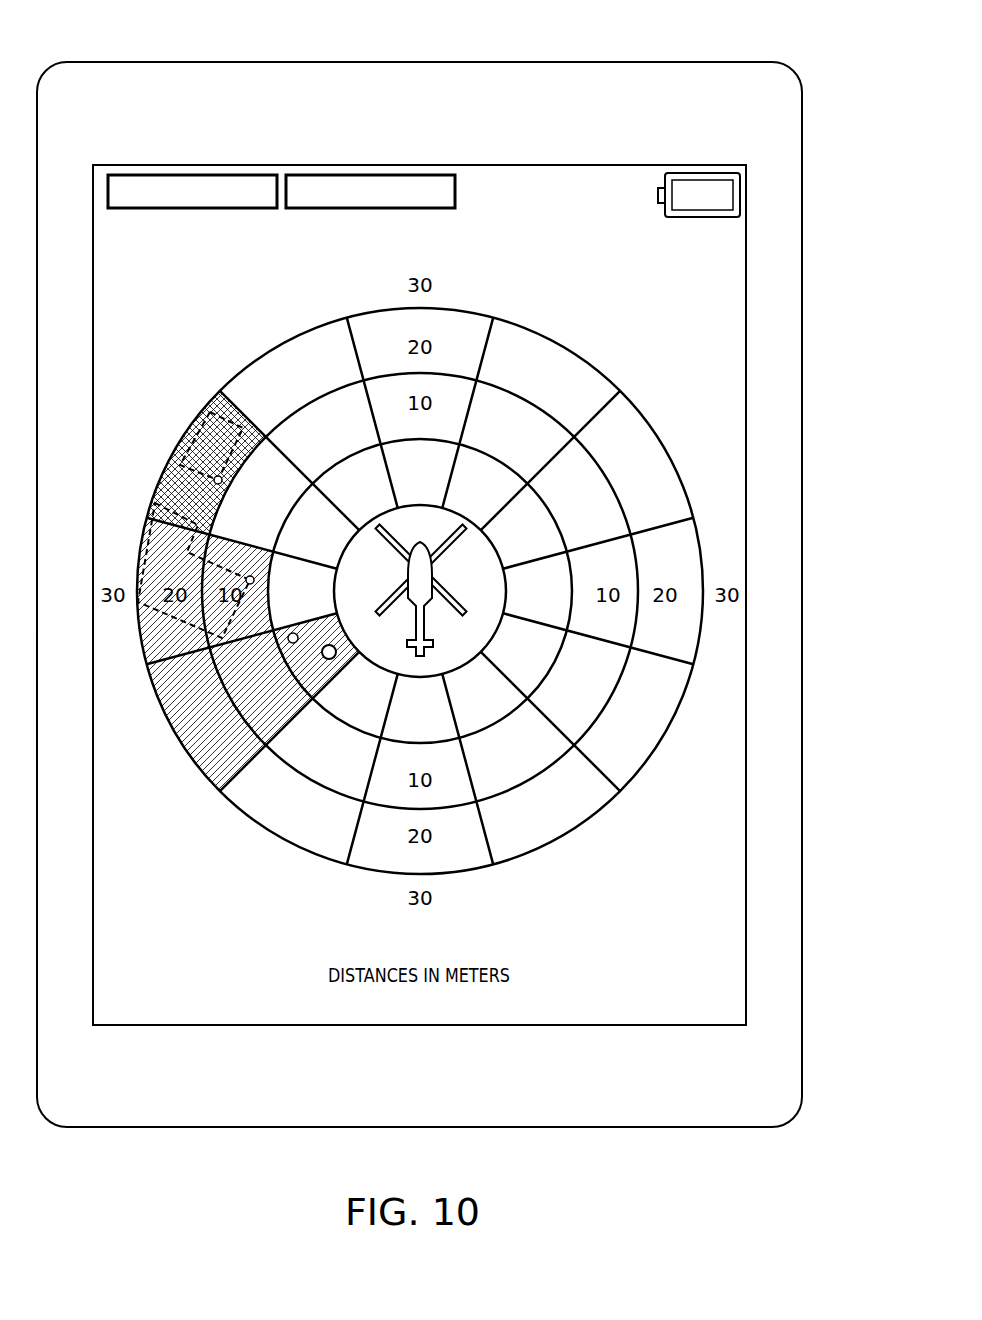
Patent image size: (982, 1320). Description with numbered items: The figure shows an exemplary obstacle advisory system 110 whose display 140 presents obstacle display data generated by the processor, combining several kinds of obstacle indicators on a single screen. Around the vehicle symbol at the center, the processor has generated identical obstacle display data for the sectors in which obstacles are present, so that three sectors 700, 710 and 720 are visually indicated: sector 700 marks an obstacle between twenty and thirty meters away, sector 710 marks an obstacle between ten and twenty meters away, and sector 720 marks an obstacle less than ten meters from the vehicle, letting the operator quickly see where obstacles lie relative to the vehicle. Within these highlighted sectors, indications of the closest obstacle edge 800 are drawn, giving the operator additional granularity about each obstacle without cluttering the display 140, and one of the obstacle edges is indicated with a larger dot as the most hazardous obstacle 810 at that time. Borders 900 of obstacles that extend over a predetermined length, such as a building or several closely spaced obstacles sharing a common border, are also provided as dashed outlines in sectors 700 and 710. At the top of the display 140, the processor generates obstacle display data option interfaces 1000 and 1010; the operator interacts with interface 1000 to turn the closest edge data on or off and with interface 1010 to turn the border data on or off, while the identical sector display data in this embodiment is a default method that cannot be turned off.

The obstacle advisory system 110 is at (597, 62).
The display 140 is at (746, 420).
The obstacle display data option interface 1000 is at (195, 178).
The obstacle display data option interface 1010 is at (362, 178).
The sector 700 is at (158, 488).
The sector 710 is at (138, 562).
The sector 720 is at (176, 733).
The obstacle edge 800 is at (223, 480).
The most hazardous obstacle 810 is at (293, 633).
The borders 900 is at (180, 462).